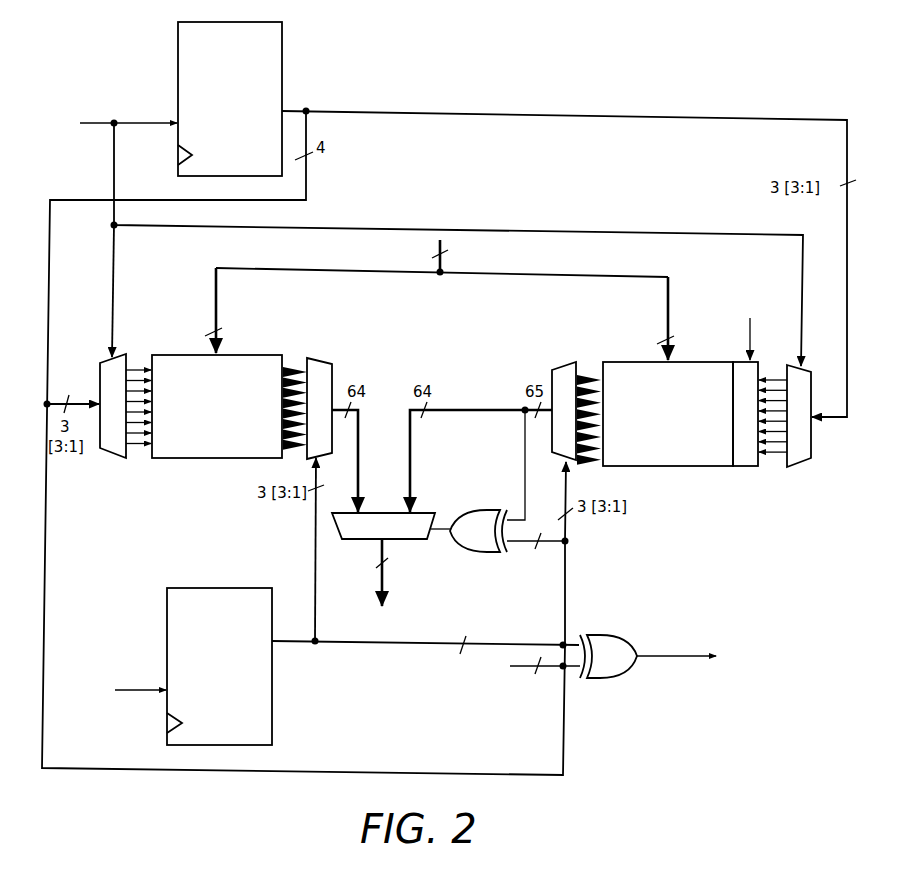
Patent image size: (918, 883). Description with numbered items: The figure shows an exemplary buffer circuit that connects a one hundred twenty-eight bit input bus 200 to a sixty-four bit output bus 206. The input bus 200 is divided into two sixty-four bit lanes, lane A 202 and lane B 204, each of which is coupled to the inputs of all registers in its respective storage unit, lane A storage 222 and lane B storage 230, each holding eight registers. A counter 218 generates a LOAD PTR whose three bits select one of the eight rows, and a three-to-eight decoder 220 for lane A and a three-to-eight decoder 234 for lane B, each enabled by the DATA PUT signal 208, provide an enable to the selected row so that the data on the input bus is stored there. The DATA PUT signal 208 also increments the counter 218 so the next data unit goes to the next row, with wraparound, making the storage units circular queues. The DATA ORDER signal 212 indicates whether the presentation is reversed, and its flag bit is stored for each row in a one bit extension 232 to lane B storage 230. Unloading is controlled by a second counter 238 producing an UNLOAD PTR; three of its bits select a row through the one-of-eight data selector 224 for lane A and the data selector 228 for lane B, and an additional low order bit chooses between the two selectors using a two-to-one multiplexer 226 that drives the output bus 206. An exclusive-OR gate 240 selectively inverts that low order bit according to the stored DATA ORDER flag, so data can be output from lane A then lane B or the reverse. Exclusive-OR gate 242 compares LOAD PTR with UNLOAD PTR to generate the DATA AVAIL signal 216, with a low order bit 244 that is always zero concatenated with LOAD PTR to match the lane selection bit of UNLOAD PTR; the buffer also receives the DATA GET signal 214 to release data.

The input bus 200 is at (443, 262).
The lane A 202 is at (213, 318).
The lane B 204 is at (660, 325).
The output bus 206 is at (385, 577).
The DATA PUT signal 208 is at (97, 123).
The DATA ORDER signal 212 is at (752, 345).
The DATA GET signal 214 is at (138, 688).
The DATA AVAIL signal 216 is at (670, 660).
The counter 218 is at (283, 57).
The 3 to 8 decoder 220 is at (113, 458).
The lane A storage 222 is at (222, 460).
The data selector 224 is at (322, 358).
The 2 to 1 multiplexer 226 is at (425, 511).
The data selector 228 is at (563, 362).
The lane B storage 230 is at (670, 467).
The one bit extension 232 is at (743, 467).
The 3 to 8 decoder 234 is at (800, 468).
The second counter 238 is at (272, 695).
The exclusive-OR gate 240 is at (480, 553).
The exclusive-OR gate 242 is at (597, 682).
The low order bit 244 is at (520, 670).